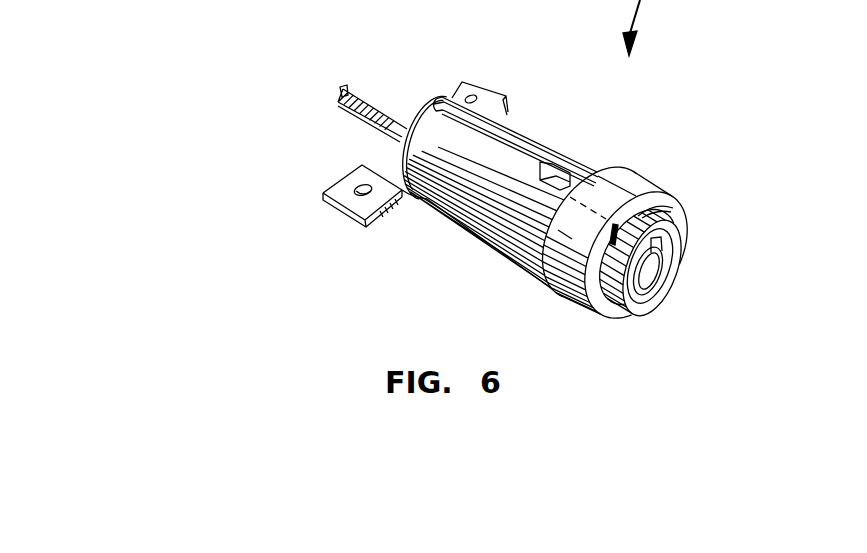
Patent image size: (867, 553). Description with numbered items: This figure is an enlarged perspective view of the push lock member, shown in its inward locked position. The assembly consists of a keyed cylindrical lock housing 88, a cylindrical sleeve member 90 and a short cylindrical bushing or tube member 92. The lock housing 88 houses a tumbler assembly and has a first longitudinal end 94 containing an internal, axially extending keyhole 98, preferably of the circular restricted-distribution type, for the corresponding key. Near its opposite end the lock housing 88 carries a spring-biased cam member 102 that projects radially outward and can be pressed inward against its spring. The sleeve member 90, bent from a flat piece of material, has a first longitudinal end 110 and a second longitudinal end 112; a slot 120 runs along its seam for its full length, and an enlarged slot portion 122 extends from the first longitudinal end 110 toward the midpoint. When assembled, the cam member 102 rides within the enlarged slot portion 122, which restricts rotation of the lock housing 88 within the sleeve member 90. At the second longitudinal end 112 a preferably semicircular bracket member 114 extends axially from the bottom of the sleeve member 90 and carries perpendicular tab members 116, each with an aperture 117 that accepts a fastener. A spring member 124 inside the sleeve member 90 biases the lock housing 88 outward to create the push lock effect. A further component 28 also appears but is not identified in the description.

The threaded screw 28 is at (368, 88).
The keyed cylindrical lock housing 88 is at (684, 243).
The cylindrical sleeve member 90 is at (565, 148).
The cylindrical bushing or tube member 92 is at (633, 180).
The first longitudinal end 94 is at (648, 317).
The keyhole 98 is at (652, 276).
The cam member 102 is at (622, 176).
The first longitudinal end 110 is at (662, 210).
The second longitudinal end 112 is at (427, 200).
The bracket member 114 is at (358, 168).
The tab member 116 is at (505, 96).
The aperture 117 is at (474, 97).
The slot 120 is at (520, 150).
The enlarged slot portion 122 is at (633, 173).
The spring member 124 is at (418, 107).